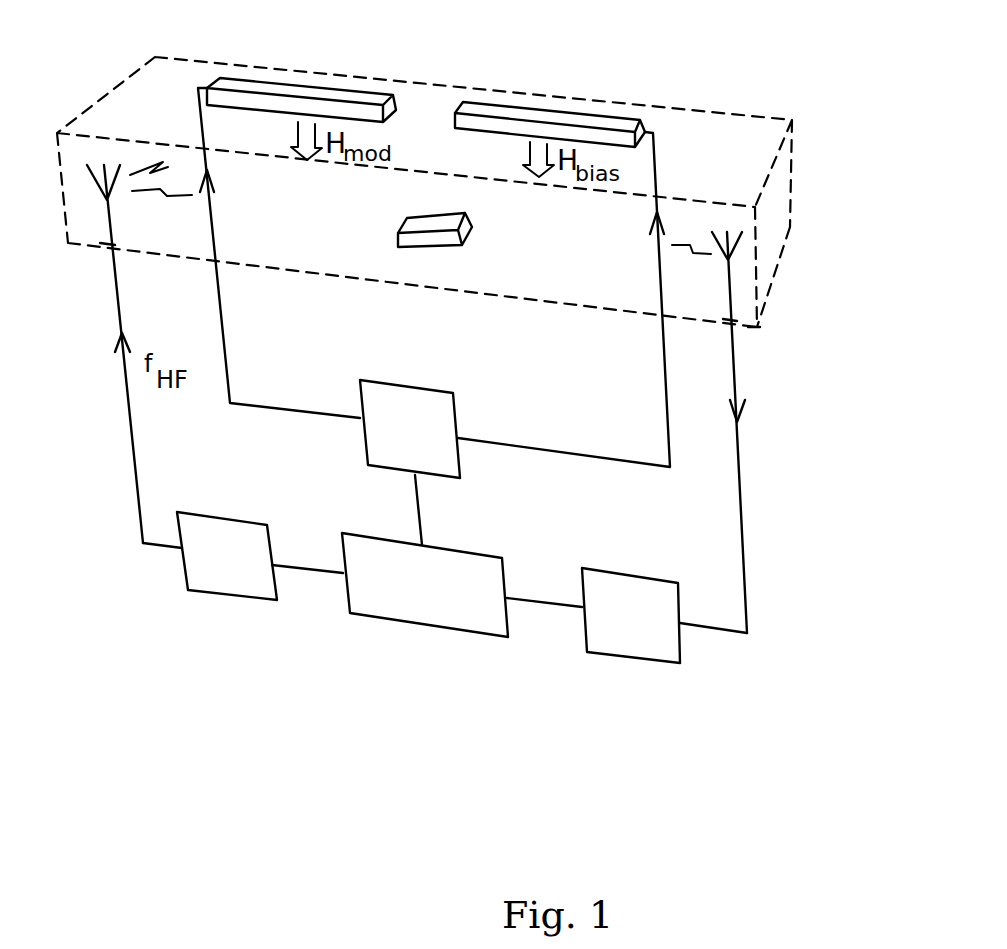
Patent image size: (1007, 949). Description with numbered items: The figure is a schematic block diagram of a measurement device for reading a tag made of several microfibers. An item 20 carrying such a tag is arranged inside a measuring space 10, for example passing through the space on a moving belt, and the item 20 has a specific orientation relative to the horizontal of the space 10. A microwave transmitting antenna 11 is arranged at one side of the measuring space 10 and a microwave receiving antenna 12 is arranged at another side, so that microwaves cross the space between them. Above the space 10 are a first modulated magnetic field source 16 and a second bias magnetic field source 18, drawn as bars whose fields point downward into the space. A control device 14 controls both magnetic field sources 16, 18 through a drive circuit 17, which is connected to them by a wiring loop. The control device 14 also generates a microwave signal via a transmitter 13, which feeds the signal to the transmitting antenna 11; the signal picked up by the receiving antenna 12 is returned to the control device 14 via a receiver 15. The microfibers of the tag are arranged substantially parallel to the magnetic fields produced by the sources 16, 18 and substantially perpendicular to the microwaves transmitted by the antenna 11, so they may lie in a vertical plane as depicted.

The measuring space 10 is at (778, 223).
The microwave transmitting antenna 11 is at (105, 205).
The microwave receiving antenna 12 is at (731, 273).
The transmitter 13 is at (220, 578).
The control device 14 is at (420, 595).
The receiver 15 is at (618, 635).
The first modulated magnetic field source 16 is at (293, 90).
The drive circuit 17 is at (400, 428).
The second bias magnetic field source 18 is at (548, 118).
The item 20 is at (422, 223).